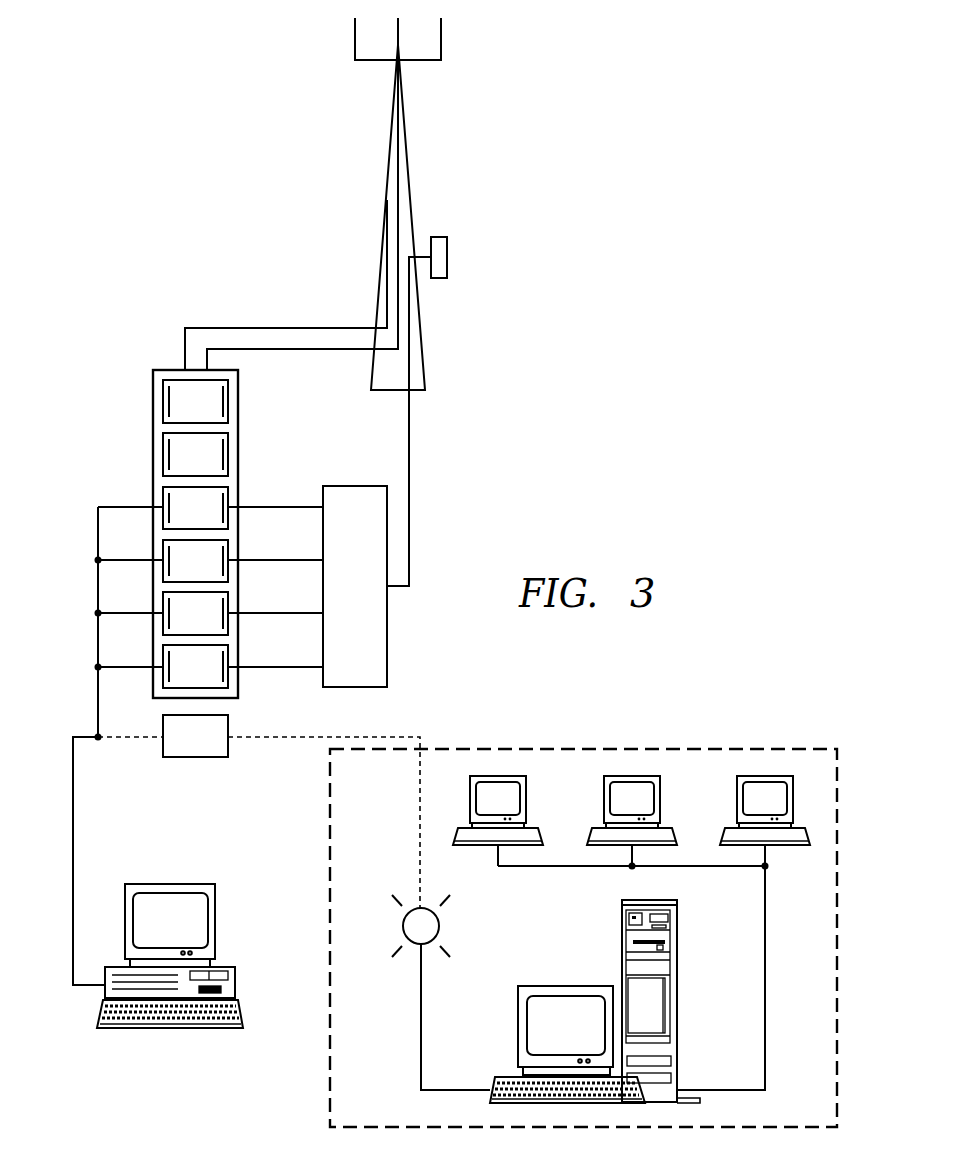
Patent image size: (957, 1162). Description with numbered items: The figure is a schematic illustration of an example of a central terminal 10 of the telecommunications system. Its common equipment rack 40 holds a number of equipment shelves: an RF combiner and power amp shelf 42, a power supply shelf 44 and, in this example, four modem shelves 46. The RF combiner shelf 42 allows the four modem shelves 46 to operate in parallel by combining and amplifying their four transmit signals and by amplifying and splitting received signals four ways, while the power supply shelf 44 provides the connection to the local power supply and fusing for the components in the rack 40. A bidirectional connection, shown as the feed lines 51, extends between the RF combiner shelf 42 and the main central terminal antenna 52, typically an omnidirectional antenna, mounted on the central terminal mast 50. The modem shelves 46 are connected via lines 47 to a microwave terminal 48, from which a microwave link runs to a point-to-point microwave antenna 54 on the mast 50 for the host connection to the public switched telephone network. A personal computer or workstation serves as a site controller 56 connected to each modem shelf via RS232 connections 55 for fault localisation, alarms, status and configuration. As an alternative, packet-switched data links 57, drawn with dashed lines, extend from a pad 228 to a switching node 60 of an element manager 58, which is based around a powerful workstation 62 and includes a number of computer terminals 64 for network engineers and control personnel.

The central terminal 10 is at (487, 511).
The common equipment rack 40 is at (239, 432).
The RF combiner and power amp shelf 42 is at (162, 403).
The power supply shelf 44 is at (162, 457).
The modem shelves 46 is at (162, 497).
The lines 47 is at (280, 668).
The microwave terminal 48 is at (369, 616).
The central terminal mast 50 is at (422, 348).
The antenna feed lines 51 is at (323, 326).
The main central terminal antenna 52 is at (442, 38).
The point-to-point microwave antenna 54 is at (447, 260).
The RS232 connections 55 is at (73, 882).
The site controller 56 is at (229, 966).
The X.25 links 57 is at (420, 737).
The element manager 58 is at (593, 748).
The switching node 60 is at (403, 925).
The workstation 62 is at (677, 985).
The computer terminals 64 is at (527, 795).
The pad 228 is at (228, 750).